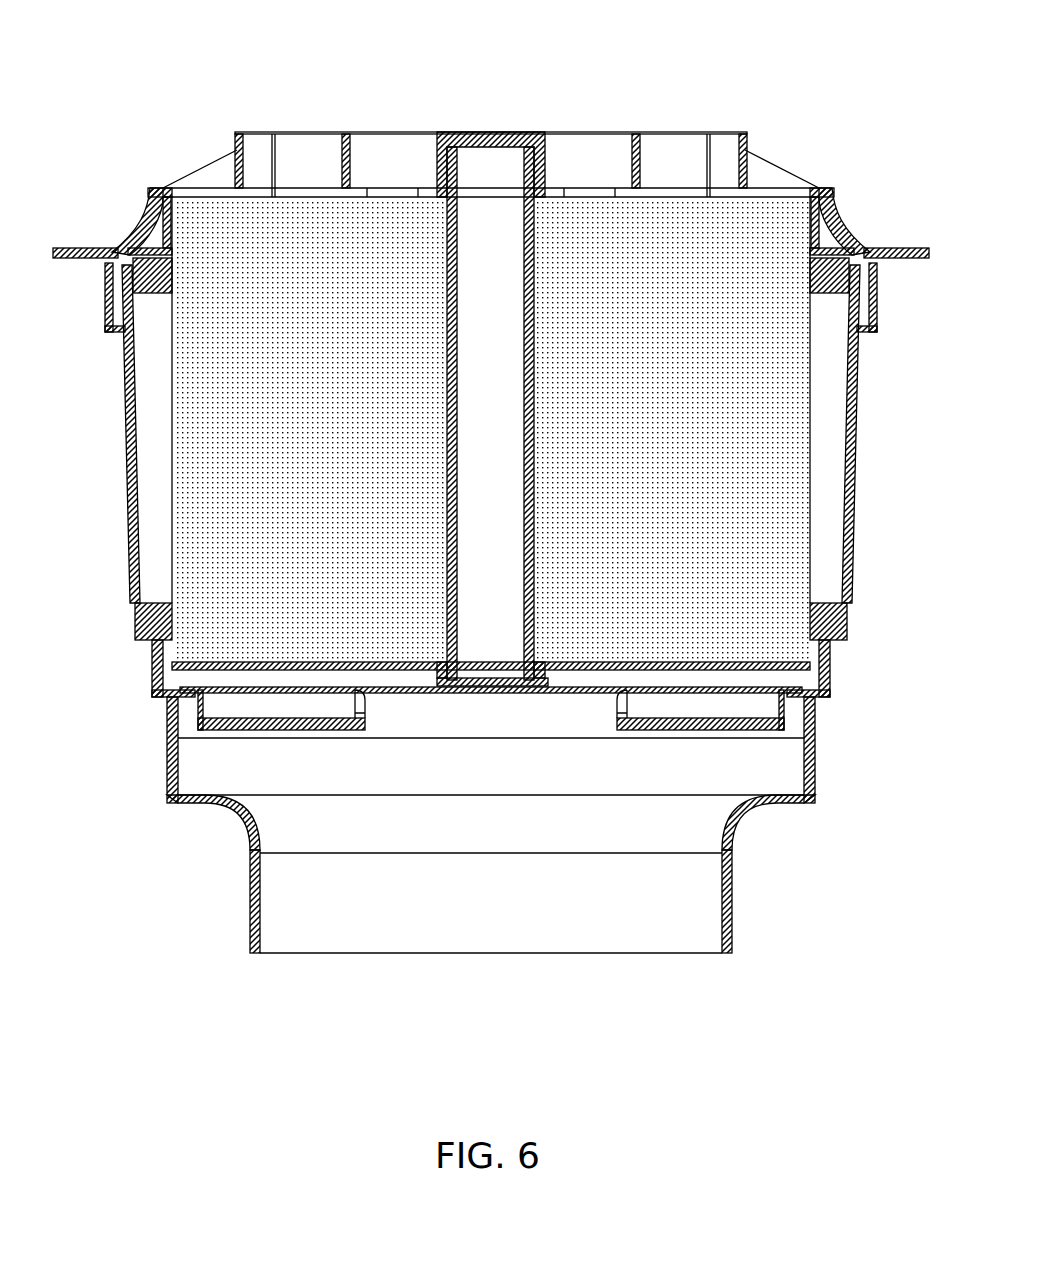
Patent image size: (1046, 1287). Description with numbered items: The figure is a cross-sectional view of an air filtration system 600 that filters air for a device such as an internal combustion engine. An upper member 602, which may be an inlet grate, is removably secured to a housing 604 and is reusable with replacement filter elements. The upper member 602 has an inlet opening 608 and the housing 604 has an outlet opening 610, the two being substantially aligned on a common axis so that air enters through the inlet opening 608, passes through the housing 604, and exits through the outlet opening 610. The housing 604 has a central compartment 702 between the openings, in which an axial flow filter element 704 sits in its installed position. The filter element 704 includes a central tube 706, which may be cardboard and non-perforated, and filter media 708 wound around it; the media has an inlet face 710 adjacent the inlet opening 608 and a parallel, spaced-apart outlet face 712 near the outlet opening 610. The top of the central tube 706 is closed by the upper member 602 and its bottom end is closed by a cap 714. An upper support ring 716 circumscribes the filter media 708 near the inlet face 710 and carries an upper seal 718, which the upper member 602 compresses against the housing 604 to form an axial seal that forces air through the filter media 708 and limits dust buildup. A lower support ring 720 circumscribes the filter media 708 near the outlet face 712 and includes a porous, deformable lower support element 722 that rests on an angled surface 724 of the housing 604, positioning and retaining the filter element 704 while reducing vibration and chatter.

The air filtration system 600 is at (128, 68).
The upper member 602 is at (135, 223).
The housing 604 is at (123, 430).
The inlet opening 608 is at (290, 120).
The outlet opening 610 is at (332, 962).
The central compartment 702 is at (827, 452).
The filter element 704 is at (761, 226).
The central tube 706 is at (516, 132).
The filter media 708 is at (777, 375).
The inlet face 710 is at (212, 193).
The outlet face 712 is at (732, 663).
The cap 714 is at (527, 686).
The upper support ring 716 is at (815, 228).
The upper seal 718 is at (875, 272).
The lower support ring 720 is at (150, 652).
The lower support element 722 is at (135, 630).
The angled surface 724 is at (843, 632).